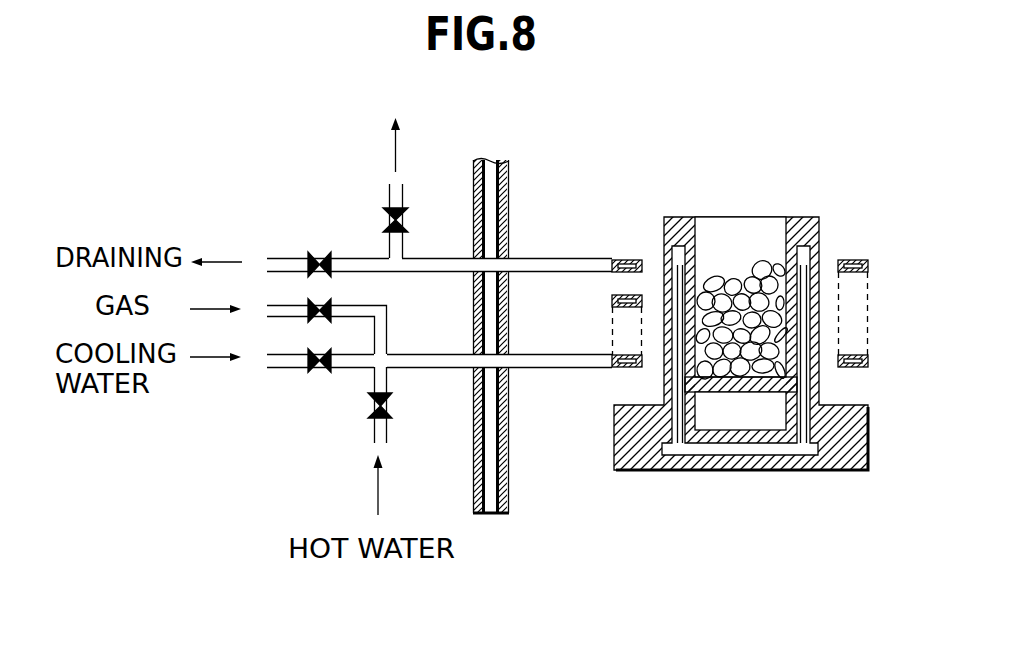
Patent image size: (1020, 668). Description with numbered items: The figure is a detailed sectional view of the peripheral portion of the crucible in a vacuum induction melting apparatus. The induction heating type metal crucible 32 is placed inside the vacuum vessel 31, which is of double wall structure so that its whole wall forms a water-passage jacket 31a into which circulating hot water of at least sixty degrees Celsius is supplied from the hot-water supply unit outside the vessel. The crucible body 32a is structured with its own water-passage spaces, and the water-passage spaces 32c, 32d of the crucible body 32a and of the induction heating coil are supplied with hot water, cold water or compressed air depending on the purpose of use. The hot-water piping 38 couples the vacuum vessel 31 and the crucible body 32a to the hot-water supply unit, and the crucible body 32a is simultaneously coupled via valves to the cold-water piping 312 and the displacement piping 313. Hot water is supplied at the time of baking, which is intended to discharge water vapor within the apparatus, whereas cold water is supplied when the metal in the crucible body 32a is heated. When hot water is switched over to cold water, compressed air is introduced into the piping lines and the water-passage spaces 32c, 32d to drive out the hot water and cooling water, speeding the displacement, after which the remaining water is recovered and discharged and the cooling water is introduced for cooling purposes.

The vacuum vessel 31 is at (480, 342).
The water-passage jacket 31a is at (473, 475).
The induction heating type metal crucible 32 is at (773, 328).
The crucible body 32a is at (868, 430).
The water-passage space 32c is at (752, 413).
The water-passage space 32d is at (622, 258).
The hot-water piping 38 is at (373, 380).
The cold-water piping 312 is at (287, 368).
The displacement piping 313 is at (297, 304).